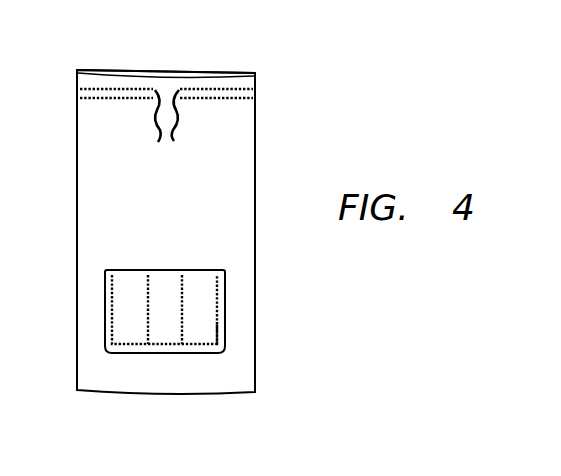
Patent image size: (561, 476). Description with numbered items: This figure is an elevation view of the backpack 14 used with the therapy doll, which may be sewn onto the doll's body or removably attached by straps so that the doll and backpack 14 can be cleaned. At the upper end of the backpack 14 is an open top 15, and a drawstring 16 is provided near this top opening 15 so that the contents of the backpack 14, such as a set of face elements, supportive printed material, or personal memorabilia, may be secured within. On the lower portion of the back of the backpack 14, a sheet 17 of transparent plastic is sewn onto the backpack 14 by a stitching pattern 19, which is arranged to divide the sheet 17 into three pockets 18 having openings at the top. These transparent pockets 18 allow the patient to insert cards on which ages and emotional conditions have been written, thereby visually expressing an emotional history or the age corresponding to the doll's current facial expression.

The backpack 14 is at (258, 122).
The open top 15 is at (156, 73).
The drawstring 16 is at (156, 133).
The sheet 17 is at (227, 299).
The pockets 18 is at (202, 276).
The stitching pattern 19 is at (218, 323).